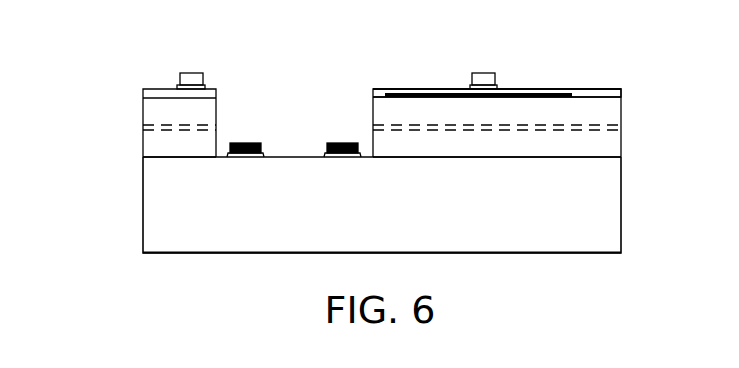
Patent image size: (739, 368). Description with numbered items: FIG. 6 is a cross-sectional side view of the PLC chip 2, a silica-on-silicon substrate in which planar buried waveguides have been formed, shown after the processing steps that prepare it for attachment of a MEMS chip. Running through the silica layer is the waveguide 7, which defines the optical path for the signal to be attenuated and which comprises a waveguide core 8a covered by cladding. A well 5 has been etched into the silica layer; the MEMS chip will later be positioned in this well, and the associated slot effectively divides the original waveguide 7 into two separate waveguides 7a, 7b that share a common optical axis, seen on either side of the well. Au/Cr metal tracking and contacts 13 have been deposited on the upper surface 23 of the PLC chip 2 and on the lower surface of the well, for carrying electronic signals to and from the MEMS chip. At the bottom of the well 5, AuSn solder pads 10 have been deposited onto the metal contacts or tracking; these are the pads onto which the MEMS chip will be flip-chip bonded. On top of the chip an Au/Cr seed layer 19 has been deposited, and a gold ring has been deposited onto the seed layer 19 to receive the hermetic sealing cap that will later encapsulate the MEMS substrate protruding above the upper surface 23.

The PLC chip 2 is at (96, 256).
The well 5 is at (340, 55).
The waveguide 7 is at (622, 108).
The first waveguide 7a is at (170, 158).
The second waveguide 7b is at (590, 158).
The waveguide core 8a is at (156, 124).
The solder pads 10 is at (242, 143).
The metal contacts 13 is at (544, 93).
The seed layer 19 is at (178, 88).
The upper surface 23 is at (602, 89).